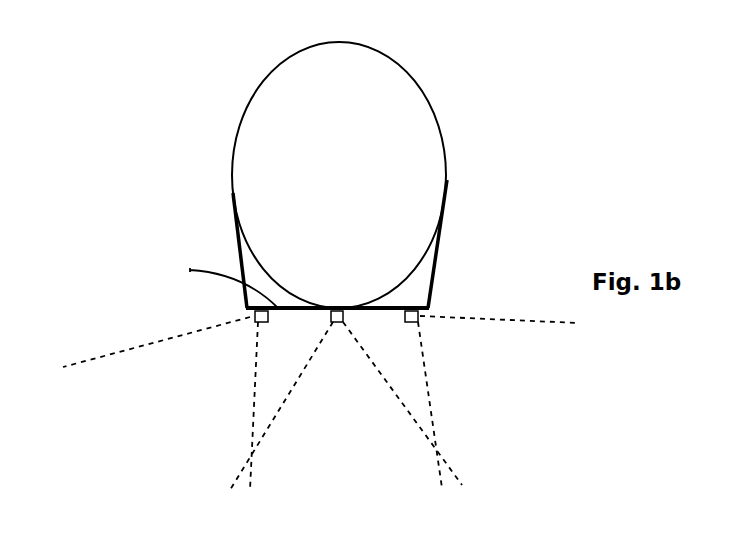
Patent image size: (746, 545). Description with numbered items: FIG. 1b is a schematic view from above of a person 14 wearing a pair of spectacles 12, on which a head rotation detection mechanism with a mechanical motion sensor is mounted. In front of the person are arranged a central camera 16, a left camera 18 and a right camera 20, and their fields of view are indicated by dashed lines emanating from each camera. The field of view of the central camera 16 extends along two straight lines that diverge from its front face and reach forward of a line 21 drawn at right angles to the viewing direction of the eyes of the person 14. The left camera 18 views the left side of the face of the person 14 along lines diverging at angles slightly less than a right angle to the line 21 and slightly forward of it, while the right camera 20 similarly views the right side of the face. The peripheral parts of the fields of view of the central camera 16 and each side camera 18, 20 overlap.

The pair of spectacles 12 is at (449, 248).
The person 14 is at (272, 142).
The central camera 16 is at (323, 329).
The left camera 18 is at (431, 324).
The right camera 20 is at (245, 319).
The line 21 is at (209, 275).